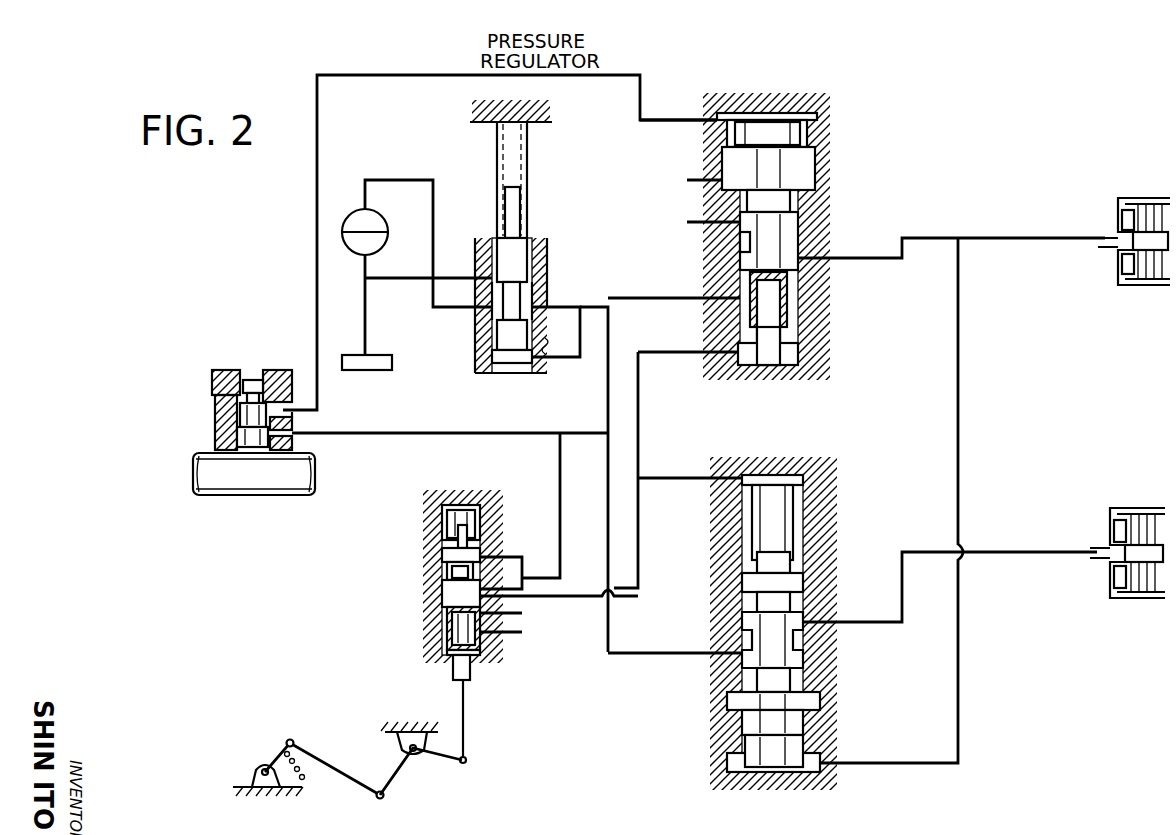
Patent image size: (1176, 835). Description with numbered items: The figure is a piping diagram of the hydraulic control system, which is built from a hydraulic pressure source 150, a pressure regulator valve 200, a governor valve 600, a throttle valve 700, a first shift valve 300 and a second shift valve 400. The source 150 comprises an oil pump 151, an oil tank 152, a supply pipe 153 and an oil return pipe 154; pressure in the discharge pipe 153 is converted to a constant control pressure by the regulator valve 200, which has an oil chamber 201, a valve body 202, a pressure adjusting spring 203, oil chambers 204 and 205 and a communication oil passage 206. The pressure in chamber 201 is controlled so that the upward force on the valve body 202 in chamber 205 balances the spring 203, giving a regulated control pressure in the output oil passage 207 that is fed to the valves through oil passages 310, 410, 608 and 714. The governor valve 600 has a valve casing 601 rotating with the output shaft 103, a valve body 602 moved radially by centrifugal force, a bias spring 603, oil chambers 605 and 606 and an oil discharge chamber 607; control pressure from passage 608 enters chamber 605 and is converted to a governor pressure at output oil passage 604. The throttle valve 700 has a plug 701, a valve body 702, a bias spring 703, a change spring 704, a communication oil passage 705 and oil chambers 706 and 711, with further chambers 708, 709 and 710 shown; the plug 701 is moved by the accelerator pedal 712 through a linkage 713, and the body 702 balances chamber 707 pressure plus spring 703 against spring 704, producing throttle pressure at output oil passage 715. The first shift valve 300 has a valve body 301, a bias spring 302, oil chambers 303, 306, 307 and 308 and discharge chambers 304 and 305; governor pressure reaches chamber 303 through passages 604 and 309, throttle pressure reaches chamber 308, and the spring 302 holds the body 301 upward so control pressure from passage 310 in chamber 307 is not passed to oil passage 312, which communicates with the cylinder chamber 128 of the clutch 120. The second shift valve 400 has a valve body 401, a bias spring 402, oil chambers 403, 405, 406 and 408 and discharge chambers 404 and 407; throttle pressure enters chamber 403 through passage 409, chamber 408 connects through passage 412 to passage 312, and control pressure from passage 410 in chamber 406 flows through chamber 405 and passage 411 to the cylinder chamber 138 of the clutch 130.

The output shaft 103 is at (258, 497).
The clutch 120 is at (1127, 191).
The cylinder chamber of the clutch 128 is at (1118, 222).
The clutch 130 is at (1140, 495).
The cylinder chamber of the clutch 138 is at (1112, 530).
The hydraulic pressure source 150 is at (363, 175).
The oil pump 151 is at (372, 245).
The oil tank 152 is at (362, 372).
The supply pipe 153 is at (430, 183).
The oil return pipe 154 is at (432, 291).
The pressure regulator valve 200 is at (590, 210).
The oil chamber 201 is at (488, 308).
The valve body 202 is at (518, 258).
The pressure adjusting spring 203 is at (530, 156).
The oil chamber 204 is at (527, 300).
The oil chamber 205 is at (520, 365).
The communication oil passage 206 is at (568, 360).
The output oil passage 207 is at (600, 310).
The first shift valve 300 is at (787, 100).
The valve body 301 is at (815, 117).
The bias spring 302 is at (780, 366).
The oil chamber 303 is at (810, 128).
The oil discharge chamber 304 is at (815, 178).
The oil discharge chamber 305 is at (798, 224).
The oil chamber 306 is at (740, 262).
The oil chamber 307 is at (790, 296).
The oil chamber 308 is at (800, 357).
The oil passage 309 is at (678, 103).
The oil passage 310 is at (662, 300).
The oil passage 312 is at (955, 239).
The second shift valve 400 is at (794, 468).
The valve body 401 is at (790, 563).
The bias spring 402 is at (805, 477).
The oil chamber 403 is at (797, 492).
The oil discharge chamber 404 is at (805, 580).
The oil chamber 405 is at (742, 620).
The oil chamber 406 is at (803, 660).
The oil discharge chamber 407 is at (727, 705).
The oil chamber 408 is at (727, 763).
The oil passage 409 is at (703, 480).
The oil passage 410 is at (658, 655).
The oil passage 411 is at (858, 624).
The oil passage 412 is at (925, 762).
The governor valve 600 is at (170, 365).
The valve casing 601 is at (278, 372).
The valve body 602 is at (252, 378).
The bias spring 603 is at (294, 420).
The output oil passage 604 is at (316, 290).
The oil chamber 605 is at (237, 440).
The oil chamber 606 is at (240, 416).
The oil discharge chamber 607 is at (212, 385).
The oil passage 608 is at (372, 434).
The throttle valve 700 is at (347, 617).
The plug 701 is at (472, 686).
The valve body 702 is at (470, 540).
The bias spring 703 is at (473, 505).
The change spring 704 is at (482, 645).
The communication oil passage 705 is at (526, 568).
The oil chamber 706 is at (442, 516).
The oil chamber 707 is at (442, 554).
The spool land 708 is at (447, 572).
The spool land 709 is at (442, 595).
The spool land 710 is at (447, 625).
The oil chamber 711 is at (442, 650).
The accelerator pedal 712 is at (283, 746).
The linkage 713 is at (392, 768).
The oil passage 714 is at (560, 462).
The output oil passage 715 is at (590, 598).